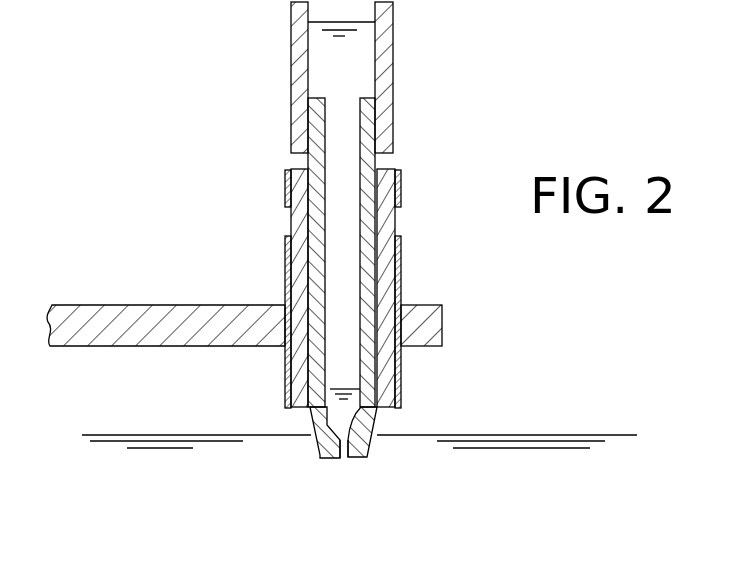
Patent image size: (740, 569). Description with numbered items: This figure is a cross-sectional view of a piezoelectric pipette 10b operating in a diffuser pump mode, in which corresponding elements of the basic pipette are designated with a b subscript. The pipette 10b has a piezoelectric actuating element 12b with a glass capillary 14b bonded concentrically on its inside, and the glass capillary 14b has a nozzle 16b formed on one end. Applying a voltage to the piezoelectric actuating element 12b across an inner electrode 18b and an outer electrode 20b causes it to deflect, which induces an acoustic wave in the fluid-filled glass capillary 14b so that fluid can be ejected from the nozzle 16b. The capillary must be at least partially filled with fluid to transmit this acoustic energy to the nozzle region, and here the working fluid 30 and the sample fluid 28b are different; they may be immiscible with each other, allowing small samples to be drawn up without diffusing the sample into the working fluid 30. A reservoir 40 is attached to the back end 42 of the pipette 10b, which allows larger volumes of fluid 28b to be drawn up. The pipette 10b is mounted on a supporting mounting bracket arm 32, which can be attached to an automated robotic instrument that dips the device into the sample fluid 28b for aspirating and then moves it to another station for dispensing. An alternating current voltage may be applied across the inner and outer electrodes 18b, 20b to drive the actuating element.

The piezoelectric pipette 10b is at (440, 133).
The reservoir 40 is at (291, 53).
The working fluid 30 is at (362, 53).
The back end 42 is at (337, 98).
The piezoelectric actuating element 12b is at (290, 215).
The inner electrode 18b is at (400, 192).
The outer electrode 20b is at (400, 268).
The glass capillary 14b is at (375, 423).
The nozzle 16b is at (345, 466).
The sample fluid 28b is at (335, 414).
The mounting bracket arm 32 is at (108, 305).